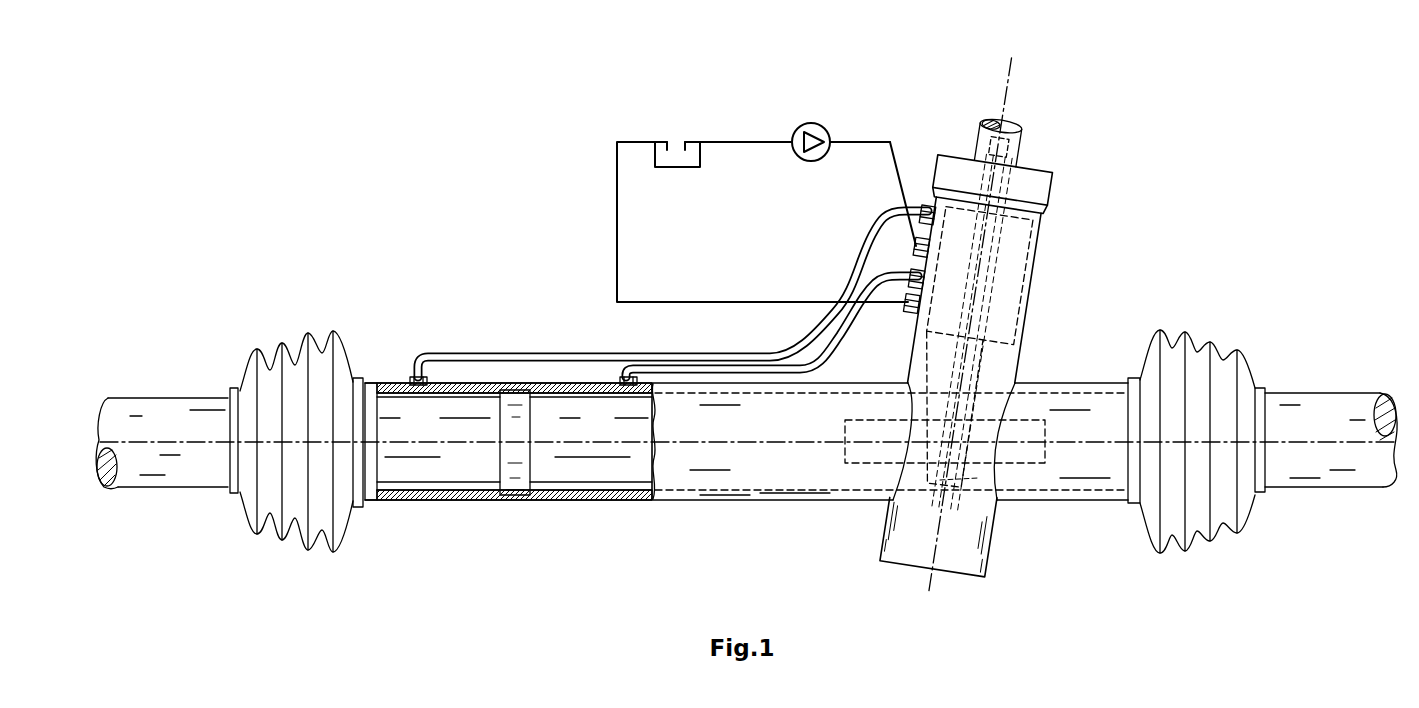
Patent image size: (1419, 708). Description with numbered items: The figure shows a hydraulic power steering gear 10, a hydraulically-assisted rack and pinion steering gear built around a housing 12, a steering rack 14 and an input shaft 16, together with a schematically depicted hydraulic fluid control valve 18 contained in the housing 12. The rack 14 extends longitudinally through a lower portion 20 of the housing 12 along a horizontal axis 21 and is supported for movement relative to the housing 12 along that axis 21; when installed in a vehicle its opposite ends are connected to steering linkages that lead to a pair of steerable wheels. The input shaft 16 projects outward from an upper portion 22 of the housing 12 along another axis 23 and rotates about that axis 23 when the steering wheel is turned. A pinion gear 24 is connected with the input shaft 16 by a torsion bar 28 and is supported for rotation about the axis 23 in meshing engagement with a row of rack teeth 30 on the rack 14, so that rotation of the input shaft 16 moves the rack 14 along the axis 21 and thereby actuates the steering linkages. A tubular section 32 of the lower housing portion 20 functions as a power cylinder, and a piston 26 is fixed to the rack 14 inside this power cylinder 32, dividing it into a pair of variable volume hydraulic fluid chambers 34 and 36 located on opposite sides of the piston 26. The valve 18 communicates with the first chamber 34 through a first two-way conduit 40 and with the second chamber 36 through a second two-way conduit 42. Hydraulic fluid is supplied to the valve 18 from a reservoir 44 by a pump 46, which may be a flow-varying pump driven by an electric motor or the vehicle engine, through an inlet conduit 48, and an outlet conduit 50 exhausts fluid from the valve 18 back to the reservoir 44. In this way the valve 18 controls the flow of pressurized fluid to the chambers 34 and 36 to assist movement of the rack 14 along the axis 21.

The hydraulic power steering gear 10 is at (472, 213).
The housing 12 is at (767, 508).
The steering rack 14 is at (508, 437).
The input shaft 16 is at (998, 142).
The hydraulic fluid control valve 18 is at (1000, 371).
The lower portion of the housing 20 is at (692, 502).
The horizontal axis 21 is at (707, 442).
The upper portion of the housing 22 is at (1007, 326).
The axis 23 is at (970, 324).
The pinion gear 24 is at (960, 474).
The piston 26 is at (517, 462).
The torsion bar 28 is at (970, 331).
The rack teeth 30 is at (877, 452).
The tubular section 32 is at (570, 500).
The first hydraulic fluid chamber 34 is at (437, 432).
The second hydraulic fluid chamber 36 is at (600, 432).
The first two-way conduit 40 is at (587, 356).
The second two-way conduit 42 is at (822, 343).
The reservoir 44 is at (682, 170).
The pump 46 is at (801, 124).
The inlet conduit 48 is at (862, 141).
The outlet conduit 50 is at (716, 302).